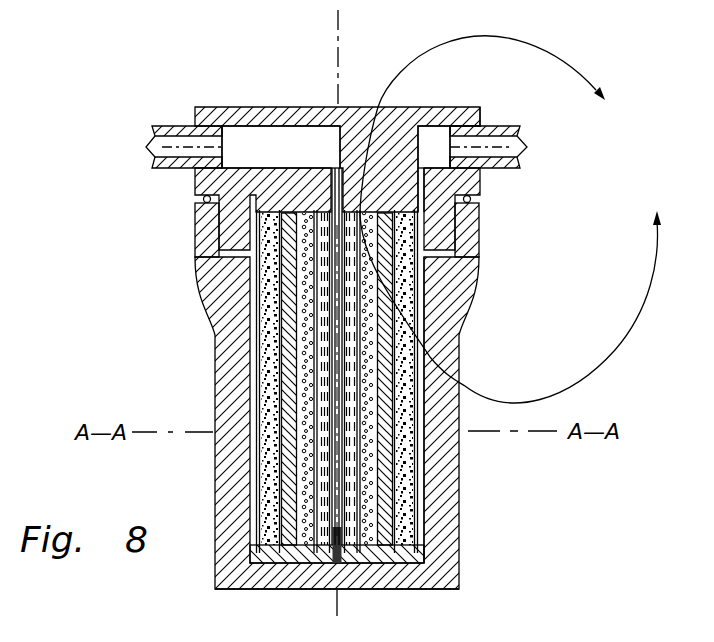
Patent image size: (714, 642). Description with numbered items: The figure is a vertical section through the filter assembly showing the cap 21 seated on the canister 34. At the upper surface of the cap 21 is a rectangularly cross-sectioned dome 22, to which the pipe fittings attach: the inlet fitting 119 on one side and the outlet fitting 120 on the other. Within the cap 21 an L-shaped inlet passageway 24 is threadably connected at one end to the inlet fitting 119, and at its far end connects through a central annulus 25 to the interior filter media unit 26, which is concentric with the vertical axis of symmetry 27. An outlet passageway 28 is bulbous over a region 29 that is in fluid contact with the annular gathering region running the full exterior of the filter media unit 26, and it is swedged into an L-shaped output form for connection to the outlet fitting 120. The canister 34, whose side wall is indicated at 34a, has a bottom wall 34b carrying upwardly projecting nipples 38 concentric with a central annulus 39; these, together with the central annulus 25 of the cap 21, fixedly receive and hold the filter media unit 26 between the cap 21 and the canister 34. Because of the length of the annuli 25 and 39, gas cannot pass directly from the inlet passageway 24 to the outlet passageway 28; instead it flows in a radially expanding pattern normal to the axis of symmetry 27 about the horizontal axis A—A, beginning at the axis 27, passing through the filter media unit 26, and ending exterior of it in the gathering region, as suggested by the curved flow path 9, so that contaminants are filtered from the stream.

The flow path 9 is at (510, 219).
The cap 21 is at (468, 94).
The dome 22 is at (482, 114).
The inlet passageway 24 is at (289, 151).
The central annulus 25 is at (337, 215).
The filter media unit 26 is at (426, 380).
The vertical axis of symmetry 27 is at (341, 27).
The outlet passageway 28 is at (442, 136).
The bulbous region 29 is at (240, 233).
The canister 34 is at (473, 459).
The housing side wall 34a is at (440, 490).
The bottom wall 34b is at (427, 577).
The nipples 38 is at (404, 522).
The central annulus 39 is at (336, 566).
The inlet fitting 119 is at (170, 169).
The outlet fitting 120 is at (517, 163).